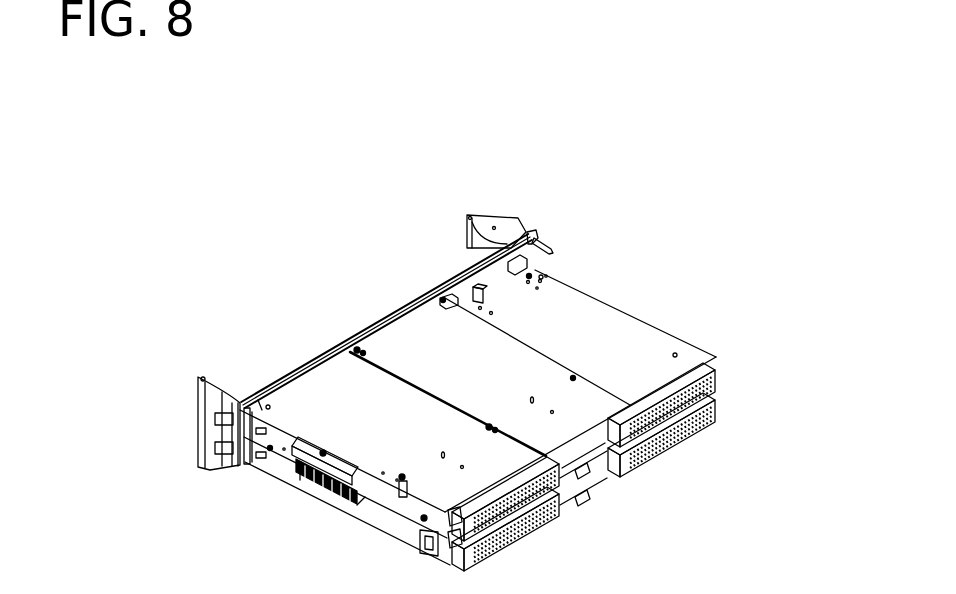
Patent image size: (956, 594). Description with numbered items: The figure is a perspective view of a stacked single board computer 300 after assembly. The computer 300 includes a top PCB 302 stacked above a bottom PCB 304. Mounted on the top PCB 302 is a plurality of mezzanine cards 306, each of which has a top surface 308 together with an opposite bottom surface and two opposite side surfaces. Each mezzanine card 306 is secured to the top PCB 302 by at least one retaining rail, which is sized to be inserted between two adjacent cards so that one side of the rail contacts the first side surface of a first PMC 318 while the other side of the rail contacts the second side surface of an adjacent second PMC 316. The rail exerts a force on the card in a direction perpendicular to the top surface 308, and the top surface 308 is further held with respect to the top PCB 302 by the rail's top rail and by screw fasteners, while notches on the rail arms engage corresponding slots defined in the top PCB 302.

The stacked single board computer 300 is at (590, 145).
The top PCB 302 is at (622, 330).
The bottom PCB 304 is at (288, 465).
The mezzanine card 306 is at (407, 338).
The top surface 308 is at (375, 452).
The second PMC 316 is at (288, 393).
The first PMC 318 is at (543, 427).